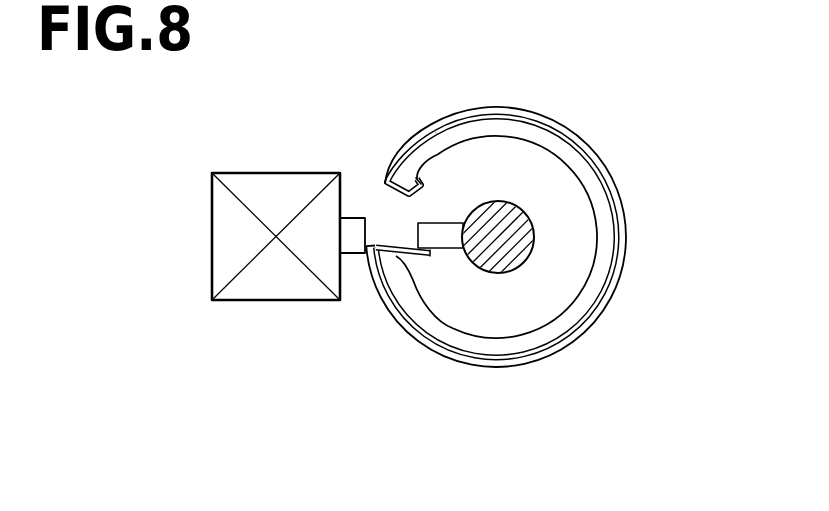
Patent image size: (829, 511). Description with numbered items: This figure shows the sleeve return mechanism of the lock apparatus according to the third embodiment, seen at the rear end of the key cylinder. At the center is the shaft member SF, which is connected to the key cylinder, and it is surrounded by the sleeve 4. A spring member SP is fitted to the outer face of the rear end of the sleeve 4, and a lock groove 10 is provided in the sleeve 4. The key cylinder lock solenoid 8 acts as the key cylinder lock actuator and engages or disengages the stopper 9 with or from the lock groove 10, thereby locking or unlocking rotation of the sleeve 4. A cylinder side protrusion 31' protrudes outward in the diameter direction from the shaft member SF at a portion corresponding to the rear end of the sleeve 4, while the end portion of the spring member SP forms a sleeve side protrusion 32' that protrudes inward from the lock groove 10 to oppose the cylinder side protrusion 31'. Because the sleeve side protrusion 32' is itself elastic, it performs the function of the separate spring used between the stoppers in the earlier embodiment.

The key cylinder lock solenoid 8 is at (212, 238).
The stopper 9 is at (350, 253).
The lock groove 10 is at (395, 233).
The cylinder side protrusion 31' is at (435, 140).
The sleeve side protrusion 32' is at (424, 338).
The spring member SP is at (604, 164).
The sleeve 4 is at (605, 227).
The shaft member SF is at (530, 258).